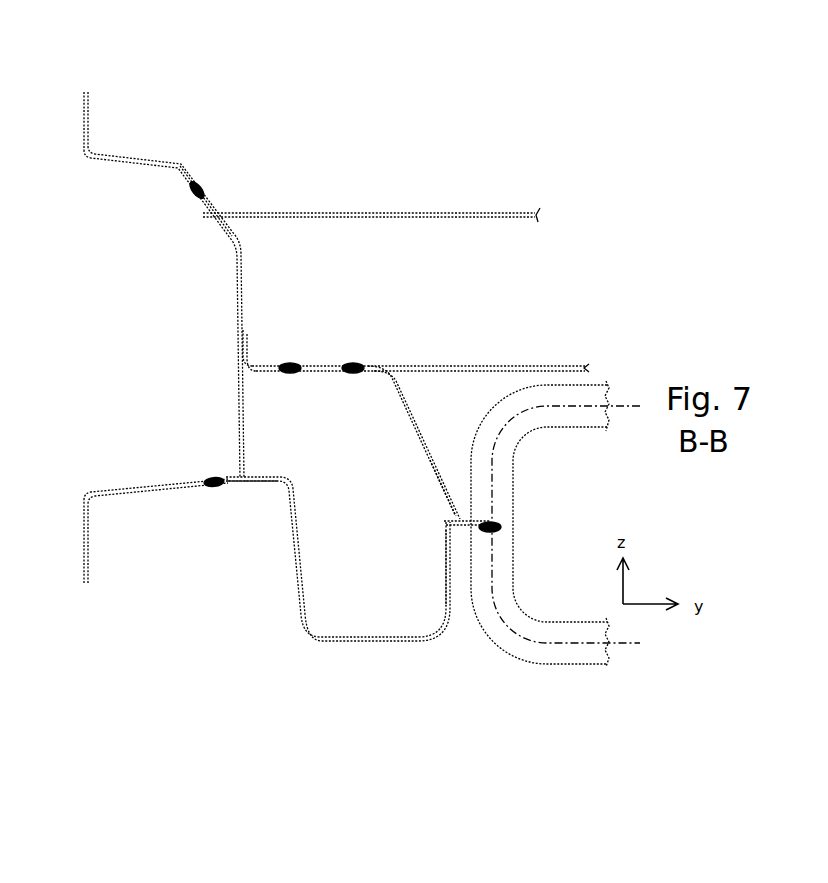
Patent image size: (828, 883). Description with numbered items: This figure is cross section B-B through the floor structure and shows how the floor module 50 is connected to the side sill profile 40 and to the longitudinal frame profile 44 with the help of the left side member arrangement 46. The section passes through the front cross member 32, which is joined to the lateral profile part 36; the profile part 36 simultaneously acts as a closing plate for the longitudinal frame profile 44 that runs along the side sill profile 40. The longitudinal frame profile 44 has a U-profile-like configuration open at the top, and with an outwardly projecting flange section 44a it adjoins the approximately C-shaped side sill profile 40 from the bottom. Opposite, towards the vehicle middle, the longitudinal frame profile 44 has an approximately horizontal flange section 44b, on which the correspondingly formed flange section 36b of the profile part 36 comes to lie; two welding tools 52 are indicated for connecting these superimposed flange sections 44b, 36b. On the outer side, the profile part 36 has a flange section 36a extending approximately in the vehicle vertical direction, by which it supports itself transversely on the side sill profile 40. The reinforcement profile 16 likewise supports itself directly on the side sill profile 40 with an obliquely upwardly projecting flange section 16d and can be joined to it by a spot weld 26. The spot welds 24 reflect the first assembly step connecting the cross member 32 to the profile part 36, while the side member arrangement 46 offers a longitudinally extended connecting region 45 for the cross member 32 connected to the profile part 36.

The reinforcement profile 16 is at (416, 212).
The flange section 16d is at (193, 178).
The spot welds 24 is at (290, 374).
The spot weld 26 is at (197, 198).
The front cross member 32 is at (494, 365).
The profile part 36 is at (412, 430).
The flange section 36a is at (247, 338).
The flange section 36b is at (461, 520).
The side sill profile 40 is at (137, 160).
The longitudinal frame profile 44 is at (356, 641).
The flange section 44a is at (252, 482).
The flange section 44b is at (473, 532).
The connecting region 45 is at (283, 622).
The side member arrangement 46 is at (208, 664).
The floor module 50 is at (547, 126).
The welding tools 52 is at (601, 386).